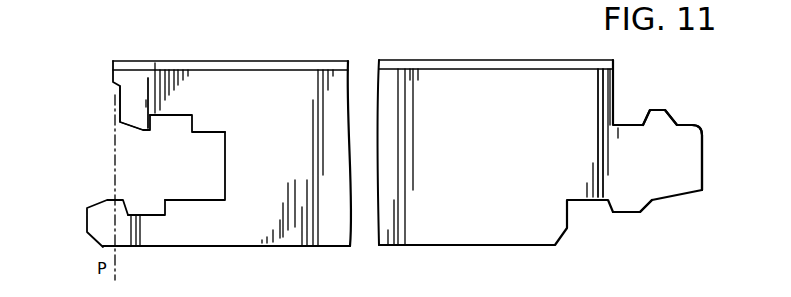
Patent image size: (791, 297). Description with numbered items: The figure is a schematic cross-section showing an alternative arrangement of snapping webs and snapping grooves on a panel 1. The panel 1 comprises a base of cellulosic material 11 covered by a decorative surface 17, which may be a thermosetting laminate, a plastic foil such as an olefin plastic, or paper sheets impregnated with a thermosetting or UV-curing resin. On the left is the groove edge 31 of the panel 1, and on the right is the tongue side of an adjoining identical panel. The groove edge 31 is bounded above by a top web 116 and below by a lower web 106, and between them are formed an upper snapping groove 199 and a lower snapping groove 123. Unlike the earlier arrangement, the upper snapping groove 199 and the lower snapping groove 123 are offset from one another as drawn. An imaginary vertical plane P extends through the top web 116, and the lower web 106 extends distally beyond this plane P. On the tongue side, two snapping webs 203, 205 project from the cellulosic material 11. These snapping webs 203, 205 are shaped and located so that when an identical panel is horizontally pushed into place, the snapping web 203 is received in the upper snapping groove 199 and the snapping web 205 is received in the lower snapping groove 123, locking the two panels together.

The panel 1 is at (301, 57).
The decorative surface 17 is at (477, 58).
The top web 116 is at (120, 88).
The upper snapping groove 199 is at (165, 117).
The groove edge 31 is at (225, 160).
The lower snapping groove 123 is at (152, 215).
The lower web 106 is at (87, 217).
The cellulosic material 11 is at (585, 102).
The snapping web 203 is at (657, 110).
The snapping web 205 is at (638, 213).